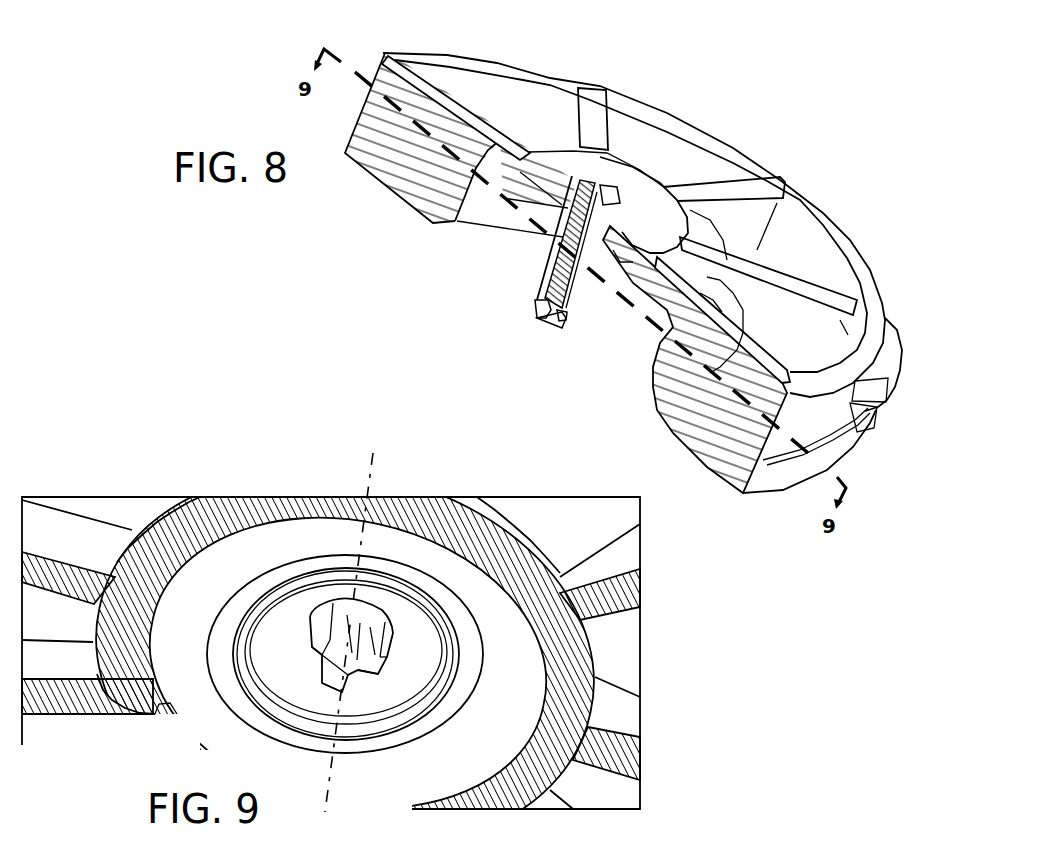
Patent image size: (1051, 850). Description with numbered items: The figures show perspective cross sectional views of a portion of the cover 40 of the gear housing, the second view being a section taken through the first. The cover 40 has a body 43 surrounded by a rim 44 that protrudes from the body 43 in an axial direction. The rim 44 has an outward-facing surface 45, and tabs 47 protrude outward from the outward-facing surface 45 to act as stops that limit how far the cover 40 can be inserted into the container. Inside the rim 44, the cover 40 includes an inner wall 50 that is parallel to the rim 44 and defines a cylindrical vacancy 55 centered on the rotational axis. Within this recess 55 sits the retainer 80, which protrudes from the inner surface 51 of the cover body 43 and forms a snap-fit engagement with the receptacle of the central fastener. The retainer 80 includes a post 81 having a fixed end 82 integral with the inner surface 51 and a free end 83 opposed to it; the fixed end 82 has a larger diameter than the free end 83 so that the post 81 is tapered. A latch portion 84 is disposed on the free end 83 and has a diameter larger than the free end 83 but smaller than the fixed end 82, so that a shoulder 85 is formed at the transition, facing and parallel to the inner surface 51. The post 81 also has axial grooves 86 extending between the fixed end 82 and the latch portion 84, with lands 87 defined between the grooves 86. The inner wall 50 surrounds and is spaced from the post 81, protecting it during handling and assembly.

In FIG. 8, the cover 40 is at (502, 63).
In FIG. 9, the cover 40 is at (150, 517).
In FIG. 9, the body 43 is at (338, 535).
In FIG. 8, the rim 44 is at (833, 417).
In FIG. 8, the outward-facing surface 45 is at (385, 54).
In FIG. 8, the tabs 47 is at (893, 331).
In FIG. 8, the inner wall 50 is at (657, 367).
In FIG. 8, the inner surface 51 is at (623, 260).
In FIG. 9, the inner surface 51 is at (437, 663).
In FIG. 8, the cylindrical vacancy 55 is at (482, 192).
In FIG. 8, the retainer 80 is at (455, 272).
In FIG. 9, the retainer 80 is at (308, 686).
In FIG. 8, the post 81 is at (592, 293).
In FIG. 9, the post 81 is at (345, 612).
In FIG. 8, the fixed end 82 is at (623, 199).
In FIG. 8, the free end 83 is at (561, 318).
In FIG. 8, the latch portion 84 is at (550, 319).
In FIG. 8, the shoulder 85 is at (543, 300).
In FIG. 9, the axial grooves 86 is at (367, 627).
In FIG. 9, the lands 87 is at (320, 620).